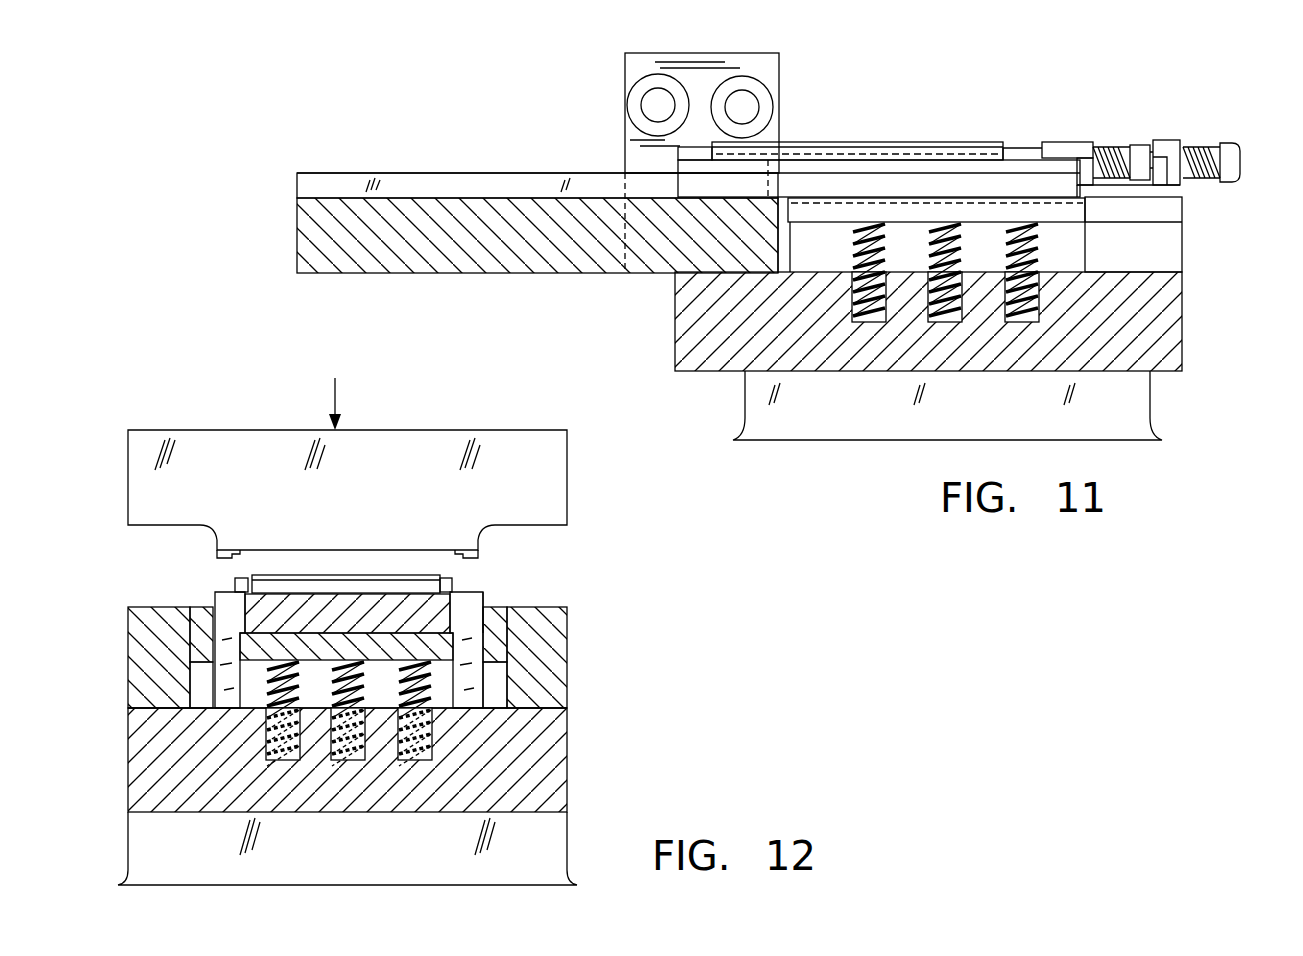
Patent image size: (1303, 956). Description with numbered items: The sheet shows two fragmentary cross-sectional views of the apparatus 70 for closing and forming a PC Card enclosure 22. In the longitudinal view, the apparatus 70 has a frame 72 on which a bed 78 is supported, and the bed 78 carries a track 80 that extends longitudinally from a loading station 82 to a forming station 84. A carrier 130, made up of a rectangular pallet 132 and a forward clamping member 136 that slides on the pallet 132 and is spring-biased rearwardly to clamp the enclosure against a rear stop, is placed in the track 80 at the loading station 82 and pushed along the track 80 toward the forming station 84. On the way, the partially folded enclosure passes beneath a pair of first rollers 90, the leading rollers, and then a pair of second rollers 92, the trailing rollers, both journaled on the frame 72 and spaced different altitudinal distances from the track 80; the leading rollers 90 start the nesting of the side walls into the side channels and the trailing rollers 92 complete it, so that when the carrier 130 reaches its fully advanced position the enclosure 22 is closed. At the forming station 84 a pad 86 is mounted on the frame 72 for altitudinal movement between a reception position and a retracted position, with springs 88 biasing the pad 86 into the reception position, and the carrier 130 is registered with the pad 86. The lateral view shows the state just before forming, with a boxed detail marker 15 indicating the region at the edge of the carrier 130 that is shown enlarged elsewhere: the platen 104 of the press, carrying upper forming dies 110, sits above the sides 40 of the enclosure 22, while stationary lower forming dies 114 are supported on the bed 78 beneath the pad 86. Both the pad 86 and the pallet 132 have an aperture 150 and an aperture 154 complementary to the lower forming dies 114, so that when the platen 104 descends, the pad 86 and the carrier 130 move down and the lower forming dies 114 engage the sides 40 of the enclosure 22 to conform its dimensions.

In FIG. 12, the wafer carrier assembly 15 is at (370, 603).
In FIG. 11, the enclosure 22 is at (838, 143).
In FIG. 12, the enclosure 22 is at (315, 583).
In FIG. 12, the sides 40 is at (229, 580).
In FIG. 11, the apparatus 70 is at (940, 318).
In FIG. 11, the frame 72 is at (745, 405).
In FIG. 12, the frame 72 is at (135, 850).
In FIG. 11, the bed 78 is at (685, 318).
In FIG. 12, the bed 78 is at (135, 783).
In FIG. 11, the track 80 is at (485, 187).
In FIG. 12, the track 80 is at (195, 626).
In FIG. 11, the loading station 82 is at (561, 161).
In FIG. 11, the forming station 84 is at (768, 110).
In FIG. 11, the pad 86 is at (1172, 209).
In FIG. 12, the pad 86 is at (180, 703).
In FIG. 11, the springs 88 is at (1040, 249).
In FIG. 12, the springs 88 is at (432, 700).
In FIG. 11, the first rollers 90 is at (640, 92).
In FIG. 11, the second rollers 92 is at (758, 92).
In FIG. 12, the platen 104 is at (569, 471).
In FIG. 12, the upper forming dies 110 is at (217, 554).
In FIG. 12, the lower forming dies 114 is at (200, 679).
In FIG. 11, the carrier 130 is at (914, 174).
In FIG. 12, the carrier 130 is at (208, 597).
In FIG. 12, the pallet 132 is at (468, 618).
In FIG. 11, the clamping member 136 is at (1065, 142).
In FIG. 12, the aperture 150 is at (455, 648).
In FIG. 12, the aperture 154 is at (492, 626).